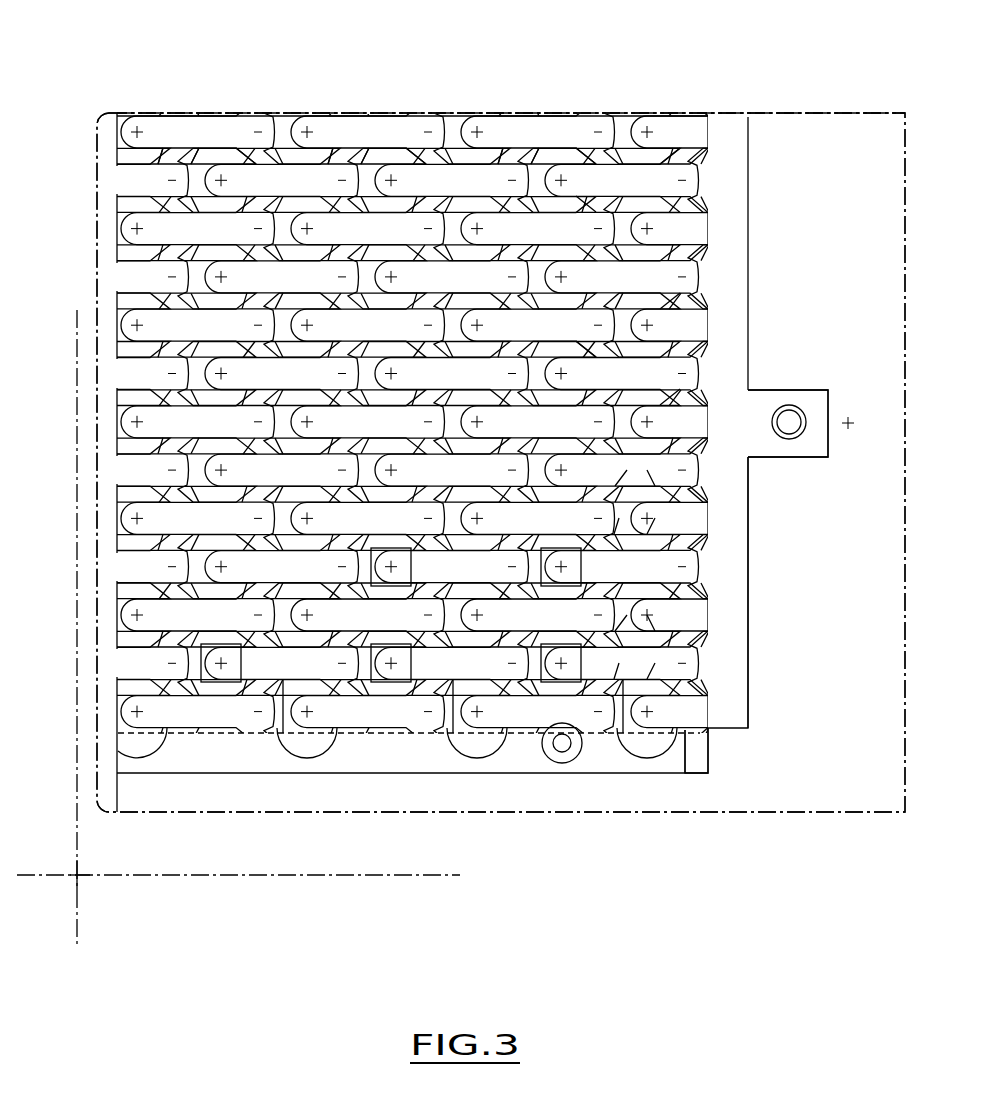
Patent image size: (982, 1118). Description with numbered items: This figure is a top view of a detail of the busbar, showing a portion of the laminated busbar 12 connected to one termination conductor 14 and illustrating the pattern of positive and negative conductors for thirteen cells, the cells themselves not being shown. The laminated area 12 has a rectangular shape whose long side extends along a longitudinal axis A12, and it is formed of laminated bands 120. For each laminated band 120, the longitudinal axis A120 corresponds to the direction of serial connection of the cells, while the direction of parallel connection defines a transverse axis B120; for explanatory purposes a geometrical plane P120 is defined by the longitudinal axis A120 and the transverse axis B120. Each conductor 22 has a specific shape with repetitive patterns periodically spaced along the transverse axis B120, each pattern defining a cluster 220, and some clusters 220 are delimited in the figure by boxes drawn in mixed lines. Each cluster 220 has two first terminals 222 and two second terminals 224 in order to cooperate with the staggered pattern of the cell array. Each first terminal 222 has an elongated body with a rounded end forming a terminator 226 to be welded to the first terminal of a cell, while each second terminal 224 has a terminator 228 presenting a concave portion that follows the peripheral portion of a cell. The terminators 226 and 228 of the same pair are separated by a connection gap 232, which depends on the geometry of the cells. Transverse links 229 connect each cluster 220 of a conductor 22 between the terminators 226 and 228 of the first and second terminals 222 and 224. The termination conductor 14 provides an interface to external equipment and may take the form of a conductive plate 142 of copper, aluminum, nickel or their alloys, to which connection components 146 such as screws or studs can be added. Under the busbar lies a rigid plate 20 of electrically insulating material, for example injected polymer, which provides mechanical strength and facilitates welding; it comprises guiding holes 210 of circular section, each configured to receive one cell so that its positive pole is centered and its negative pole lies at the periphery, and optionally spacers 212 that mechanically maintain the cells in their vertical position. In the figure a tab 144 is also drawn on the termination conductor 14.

The laminated busbar 12 is at (63, 605).
The laminated band 120 is at (97, 463).
The termination conductor 14 is at (735, 245).
The conductive plate 142 is at (735, 580).
The mounting tab 144 is at (805, 458).
The connection component 146 is at (797, 408).
The rigid plate 20 is at (673, 755).
The conductor 22 is at (178, 116).
The first terminal 222 is at (153, 116).
The second terminal 224 is at (215, 116).
The terminator 226 is at (290, 116).
The terminator 228 is at (278, 116).
The guiding hole 210 is at (596, 204).
The connection gap 232 is at (540, 362).
The spacer 212 is at (620, 497).
The transverse link 229 is at (548, 632).
The cluster 220 is at (645, 655).
The longitudinal axis A120 is at (44, 627).
The geometrical plane P120 is at (103, 865).
The longitudinal axis A12 is at (237, 892).
The transverse axis B120 is at (80, 921).